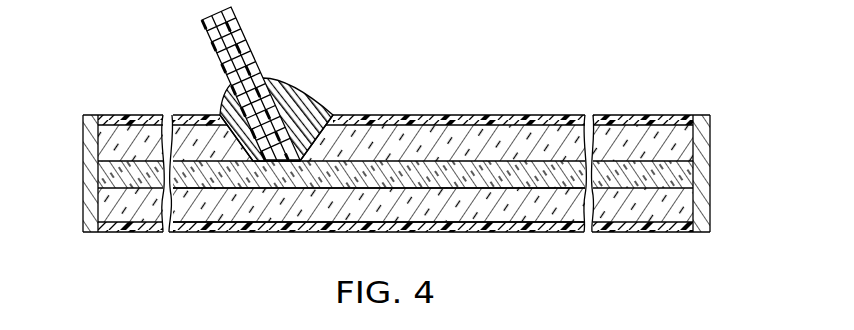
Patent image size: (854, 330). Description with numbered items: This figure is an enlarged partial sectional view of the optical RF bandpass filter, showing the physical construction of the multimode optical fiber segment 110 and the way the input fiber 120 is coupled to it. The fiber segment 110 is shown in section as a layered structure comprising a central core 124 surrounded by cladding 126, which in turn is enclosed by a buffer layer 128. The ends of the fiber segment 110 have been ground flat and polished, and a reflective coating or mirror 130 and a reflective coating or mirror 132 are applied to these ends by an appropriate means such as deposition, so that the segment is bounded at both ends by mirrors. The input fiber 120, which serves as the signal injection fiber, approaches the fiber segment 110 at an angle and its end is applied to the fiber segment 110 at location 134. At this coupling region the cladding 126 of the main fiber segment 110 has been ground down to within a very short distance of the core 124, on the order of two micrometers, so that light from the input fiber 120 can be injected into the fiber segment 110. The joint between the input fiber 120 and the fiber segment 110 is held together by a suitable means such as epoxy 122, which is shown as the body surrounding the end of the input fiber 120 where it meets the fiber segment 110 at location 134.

The multimode optical fiber segment 110 is at (394, 136).
The input fiber 120 is at (243, 35).
The epoxy 122 is at (283, 84).
The core 124 is at (99, 162).
The cladding 126 is at (507, 210).
The buffer layer 128 is at (567, 116).
The reflective coating or mirror 130 is at (83, 222).
The reflective coating or mirror 132 is at (710, 122).
The location 134 is at (283, 161).